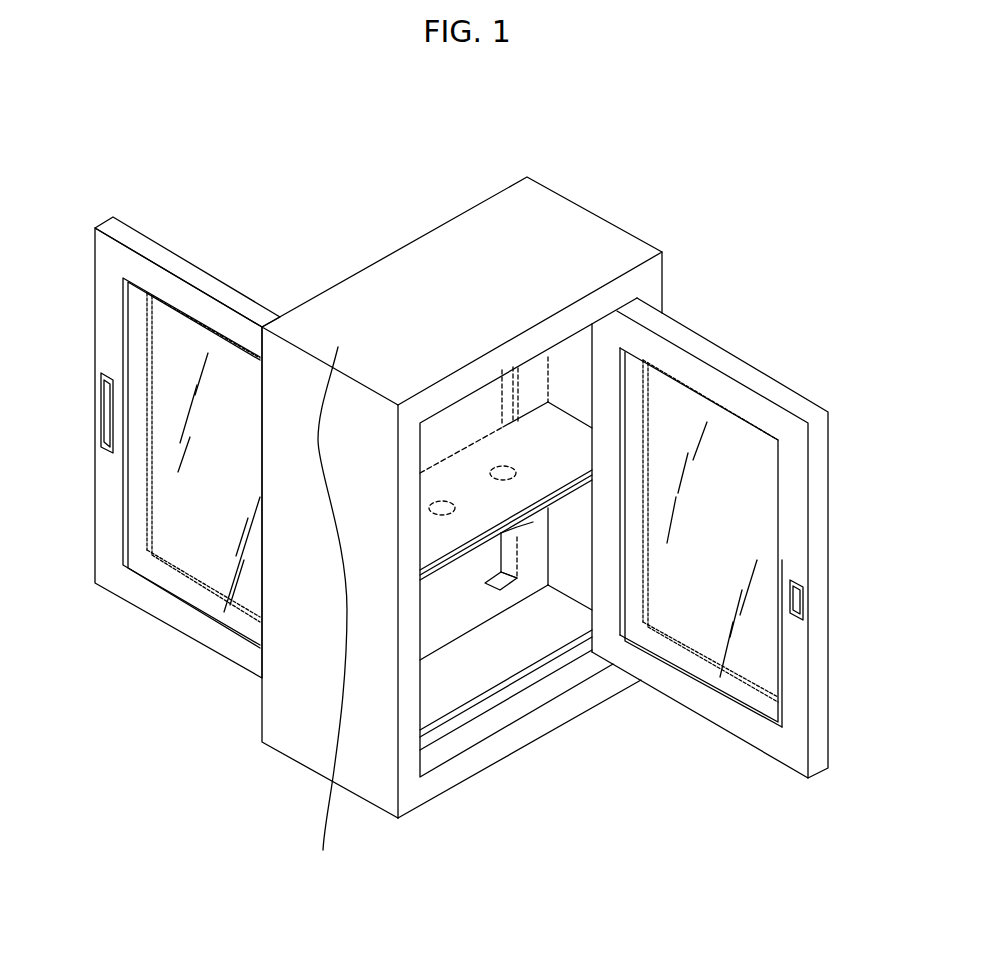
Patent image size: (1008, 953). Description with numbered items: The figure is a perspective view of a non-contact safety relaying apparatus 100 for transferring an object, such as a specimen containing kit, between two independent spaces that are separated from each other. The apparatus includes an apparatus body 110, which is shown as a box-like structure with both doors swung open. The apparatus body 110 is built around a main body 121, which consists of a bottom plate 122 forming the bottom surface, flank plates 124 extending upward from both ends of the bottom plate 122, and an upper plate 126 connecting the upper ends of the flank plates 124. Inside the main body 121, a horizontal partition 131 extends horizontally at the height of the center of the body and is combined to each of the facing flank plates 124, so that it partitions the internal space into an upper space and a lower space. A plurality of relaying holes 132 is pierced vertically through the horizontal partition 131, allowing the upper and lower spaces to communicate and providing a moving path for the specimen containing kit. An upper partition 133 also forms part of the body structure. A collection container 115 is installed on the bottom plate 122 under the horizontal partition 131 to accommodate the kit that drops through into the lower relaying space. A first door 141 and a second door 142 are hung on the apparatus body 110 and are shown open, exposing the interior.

The non-contact safety relaying apparatus 100 is at (723, 155).
The apparatus body 110 is at (234, 759).
The collection container 115 is at (487, 667).
The main body 121 is at (467, 877).
The bottom plate 122 is at (437, 783).
The flank plates 124 is at (653, 285).
The upper plate 126 is at (325, 613).
The horizontal partition 131 is at (567, 432).
The relaying holes 132 is at (450, 512).
The upper partition 133 is at (573, 467).
The first door 141 is at (187, 625).
The second door 142 is at (753, 730).